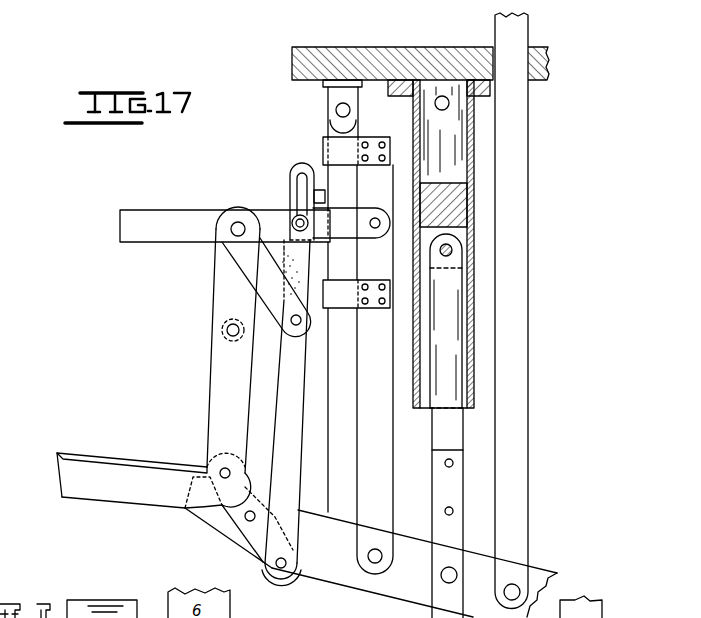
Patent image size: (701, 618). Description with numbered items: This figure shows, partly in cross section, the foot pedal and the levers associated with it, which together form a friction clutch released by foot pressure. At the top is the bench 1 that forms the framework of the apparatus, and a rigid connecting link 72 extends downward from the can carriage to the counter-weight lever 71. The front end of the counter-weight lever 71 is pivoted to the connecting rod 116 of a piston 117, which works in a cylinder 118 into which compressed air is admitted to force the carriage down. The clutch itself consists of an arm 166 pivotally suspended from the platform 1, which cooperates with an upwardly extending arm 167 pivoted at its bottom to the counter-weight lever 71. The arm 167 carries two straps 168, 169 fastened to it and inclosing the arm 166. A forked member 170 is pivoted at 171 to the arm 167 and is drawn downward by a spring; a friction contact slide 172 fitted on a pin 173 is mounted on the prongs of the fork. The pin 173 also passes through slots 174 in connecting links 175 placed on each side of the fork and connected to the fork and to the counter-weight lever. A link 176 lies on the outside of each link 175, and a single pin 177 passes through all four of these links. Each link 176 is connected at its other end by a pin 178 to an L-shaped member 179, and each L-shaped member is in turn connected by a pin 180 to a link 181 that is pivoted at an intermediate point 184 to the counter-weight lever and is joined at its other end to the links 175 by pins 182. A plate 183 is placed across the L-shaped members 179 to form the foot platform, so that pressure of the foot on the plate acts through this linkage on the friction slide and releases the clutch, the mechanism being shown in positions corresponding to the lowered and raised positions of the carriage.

The bench 1 is at (451, 53).
The rigid connecting link 72 is at (527, 400).
The counter-weight lever 71 is at (540, 568).
The cylinder 118 is at (474, 140).
The piston 117 is at (474, 211).
The connecting rod 116 is at (445, 343).
The upwardly extending arm 167 is at (388, 479).
The arm 166 is at (350, 408).
The strap 168 is at (336, 145).
The strap 169 is at (345, 300).
The forked member 170 is at (172, 214).
The pivot 171 is at (375, 216).
The friction contact slide 172 is at (325, 196).
The pin 173 is at (308, 223).
The slot 174 is at (300, 196).
The connecting link 175 is at (292, 456).
The link 176 is at (272, 296).
The pin 177 is at (296, 326).
The pin 178 is at (240, 222).
The L-shaped member 179 is at (214, 385).
The pin 180 is at (227, 468).
The link 181 is at (253, 536).
The pin 182 is at (283, 569).
The plate 183 is at (134, 455).
The intermediate pivot point 184 is at (244, 518).